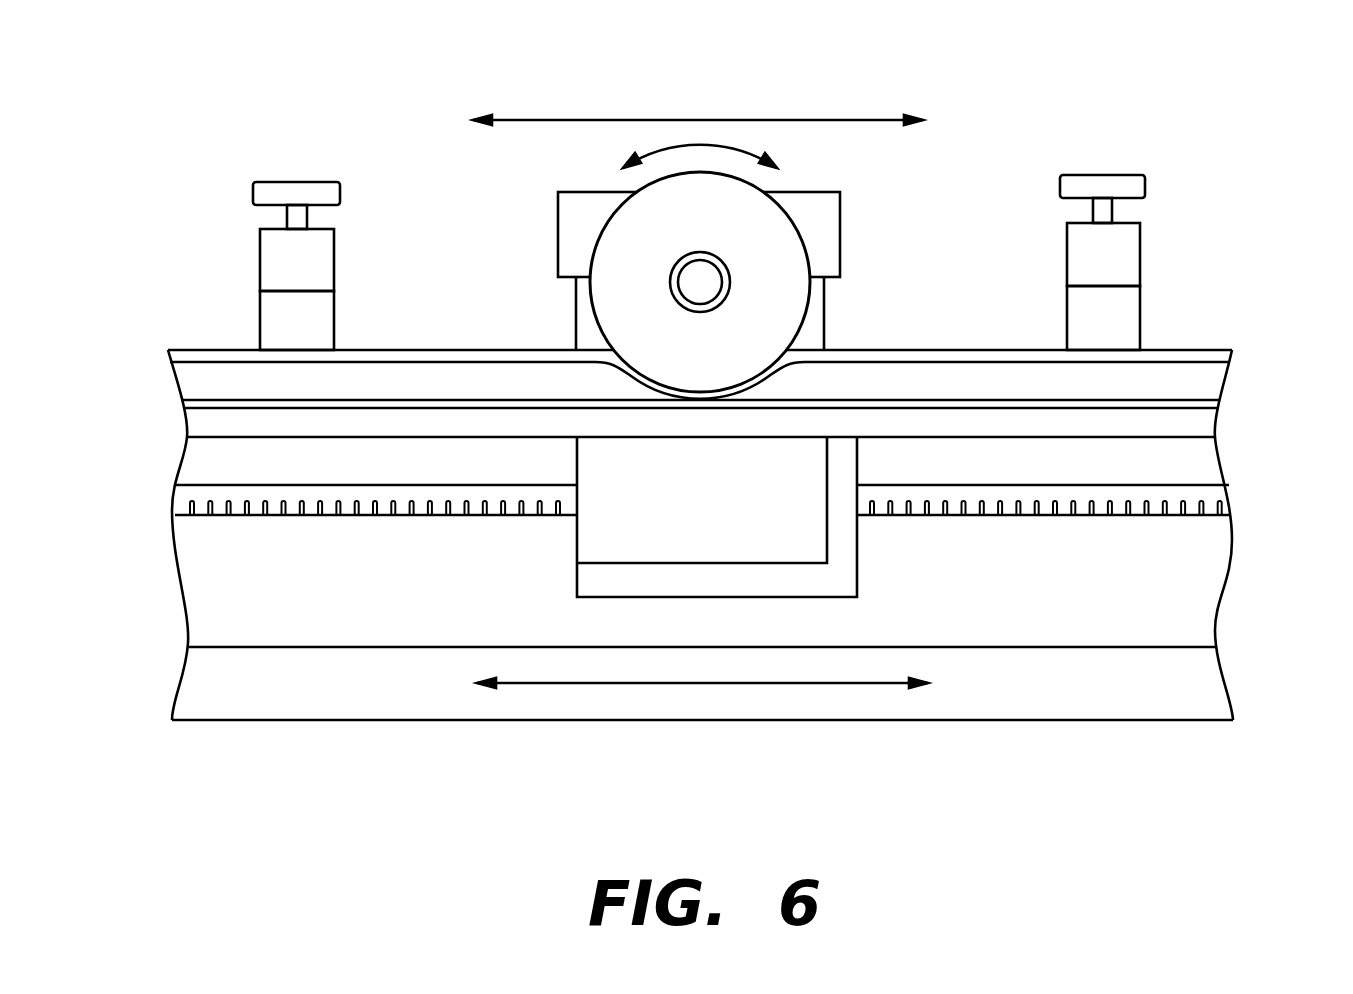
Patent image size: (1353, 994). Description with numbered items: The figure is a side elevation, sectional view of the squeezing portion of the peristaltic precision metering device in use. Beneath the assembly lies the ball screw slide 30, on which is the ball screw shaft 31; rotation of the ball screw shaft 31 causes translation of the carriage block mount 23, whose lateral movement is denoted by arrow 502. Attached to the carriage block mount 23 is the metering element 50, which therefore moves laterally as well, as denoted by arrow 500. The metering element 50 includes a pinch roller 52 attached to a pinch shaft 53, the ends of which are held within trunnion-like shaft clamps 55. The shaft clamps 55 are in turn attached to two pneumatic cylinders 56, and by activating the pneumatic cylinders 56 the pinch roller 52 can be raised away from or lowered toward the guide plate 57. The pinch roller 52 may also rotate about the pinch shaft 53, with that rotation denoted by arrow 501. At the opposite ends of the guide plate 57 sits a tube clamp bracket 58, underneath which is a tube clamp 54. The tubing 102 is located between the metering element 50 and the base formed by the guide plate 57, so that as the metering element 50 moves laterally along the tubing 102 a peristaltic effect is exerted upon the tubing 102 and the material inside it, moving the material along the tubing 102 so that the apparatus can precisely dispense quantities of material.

The ball screw slide 30 is at (933, 603).
The guide plate 57 is at (200, 425).
The ball screw shaft 31 is at (183, 497).
The carriage block mount 23 is at (587, 582).
The pneumatic cylinders 56 is at (585, 322).
The tubing 102 is at (990, 352).
The tube clamp bracket 58 is at (267, 257).
The tube clamp 54 is at (267, 315).
The metering element 50 is at (695, 261).
The shaft clamps 55 is at (563, 228).
The pinch roller 52 is at (778, 235).
The pinch shaft 53 is at (703, 281).
The arrow denoting lateral movement of the metering element 500 is at (615, 120).
The arrow denoting rotation of the pinch roller 501 is at (697, 143).
The arrow denoting lateral movement of the carriage block mount 502 is at (717, 685).